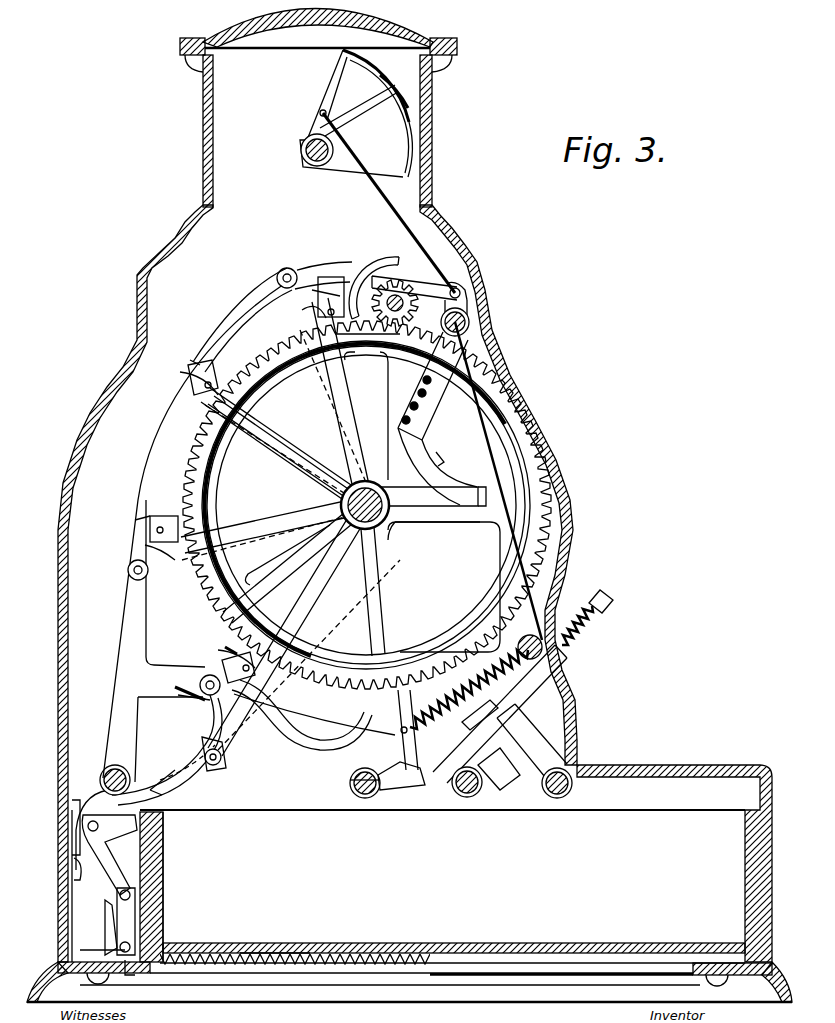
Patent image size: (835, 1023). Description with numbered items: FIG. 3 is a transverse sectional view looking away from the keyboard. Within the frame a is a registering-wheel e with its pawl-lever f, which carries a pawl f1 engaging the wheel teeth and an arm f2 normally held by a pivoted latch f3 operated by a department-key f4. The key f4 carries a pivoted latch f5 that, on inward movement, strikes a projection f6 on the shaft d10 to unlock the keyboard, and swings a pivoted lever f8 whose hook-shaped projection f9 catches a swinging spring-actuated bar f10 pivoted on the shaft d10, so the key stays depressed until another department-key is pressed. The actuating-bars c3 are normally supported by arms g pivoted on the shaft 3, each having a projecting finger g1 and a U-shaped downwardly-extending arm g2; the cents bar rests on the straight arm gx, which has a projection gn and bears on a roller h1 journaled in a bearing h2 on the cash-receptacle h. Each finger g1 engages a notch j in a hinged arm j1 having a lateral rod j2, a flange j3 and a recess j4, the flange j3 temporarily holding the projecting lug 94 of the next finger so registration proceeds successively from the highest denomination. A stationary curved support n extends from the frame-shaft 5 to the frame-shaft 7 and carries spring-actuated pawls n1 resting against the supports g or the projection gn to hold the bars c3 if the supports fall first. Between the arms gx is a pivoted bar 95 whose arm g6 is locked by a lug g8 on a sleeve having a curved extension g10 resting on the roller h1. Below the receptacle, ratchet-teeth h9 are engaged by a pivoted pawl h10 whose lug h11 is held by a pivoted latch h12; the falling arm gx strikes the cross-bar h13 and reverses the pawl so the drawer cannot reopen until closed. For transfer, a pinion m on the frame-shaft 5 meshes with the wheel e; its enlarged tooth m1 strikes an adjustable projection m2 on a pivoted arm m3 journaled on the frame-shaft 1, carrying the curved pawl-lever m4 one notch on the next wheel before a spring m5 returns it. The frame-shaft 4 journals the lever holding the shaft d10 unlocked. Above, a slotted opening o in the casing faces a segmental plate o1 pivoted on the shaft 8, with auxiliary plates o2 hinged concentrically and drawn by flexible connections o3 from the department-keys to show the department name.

The frame a is at (409, 506).
The registering-wheel e is at (192, 470).
The stationary curved support n is at (134, 432).
The spring-actuated pawl n1 is at (288, 268).
The actuating-bar c3 is at (335, 285).
The pawl-lever f is at (270, 438).
The pawl f1 is at (312, 310).
The arm f2 is at (395, 598).
The pivoted latch f3 is at (415, 758).
The department-key f4 is at (585, 645).
The pivoted latch f5 is at (445, 750).
The projection f6 is at (378, 800).
The pivoted lever f8 is at (525, 727).
The hook-shaped projection f9 is at (542, 782).
The swinging spring-actuated bar f10 is at (496, 792).
The shaft d10 is at (466, 798).
The arm g is at (290, 524).
The projecting finger g1 is at (421, 497).
The downwardly-extending arm g2 is at (330, 742).
The projection gn is at (262, 708).
The straight arm gx is at (258, 682).
The projecting arm g6 is at (165, 780).
The lug g8 is at (165, 815).
The curved extension g10 is at (70, 805).
The projecting lug 94 is at (220, 772).
The pivoted bar 95 is at (222, 757).
The cash-receptacle h is at (442, 887).
The roller h1 is at (70, 840).
The bearing h2 is at (109, 885).
The ratchet-teeth h9 is at (262, 958).
The pivoted pawl h10 is at (130, 965).
The lug h11 is at (78, 953).
The pivoted latch h12 is at (105, 915).
The cross-bar h13 is at (72, 866).
The notch j is at (476, 486).
The hinged arm j1 is at (440, 413).
The lateral projecting rod j2 is at (420, 395).
The flange j3 is at (440, 460).
The recess j4 is at (450, 445).
The pinion m is at (398, 287).
The enlarged tooth m1 is at (428, 290).
The lug m2 is at (470, 312).
The pivoted arm m3 is at (470, 322).
The curved pawl-lever m4 is at (380, 280).
The spring m5 is at (462, 291).
The slotted opening o is at (430, 153).
The segmental plate o1 is at (408, 143).
The auxiliary plate o2 is at (403, 93).
The flexible connection o3 is at (383, 208).
The frame-shaft 1 is at (478, 333).
The shaft 3 is at (380, 490).
The frame-shaft 4 is at (348, 787).
The frame-shaft 5 is at (382, 338).
The frame-shaft 7 is at (103, 772).
The shaft 8 is at (300, 153).